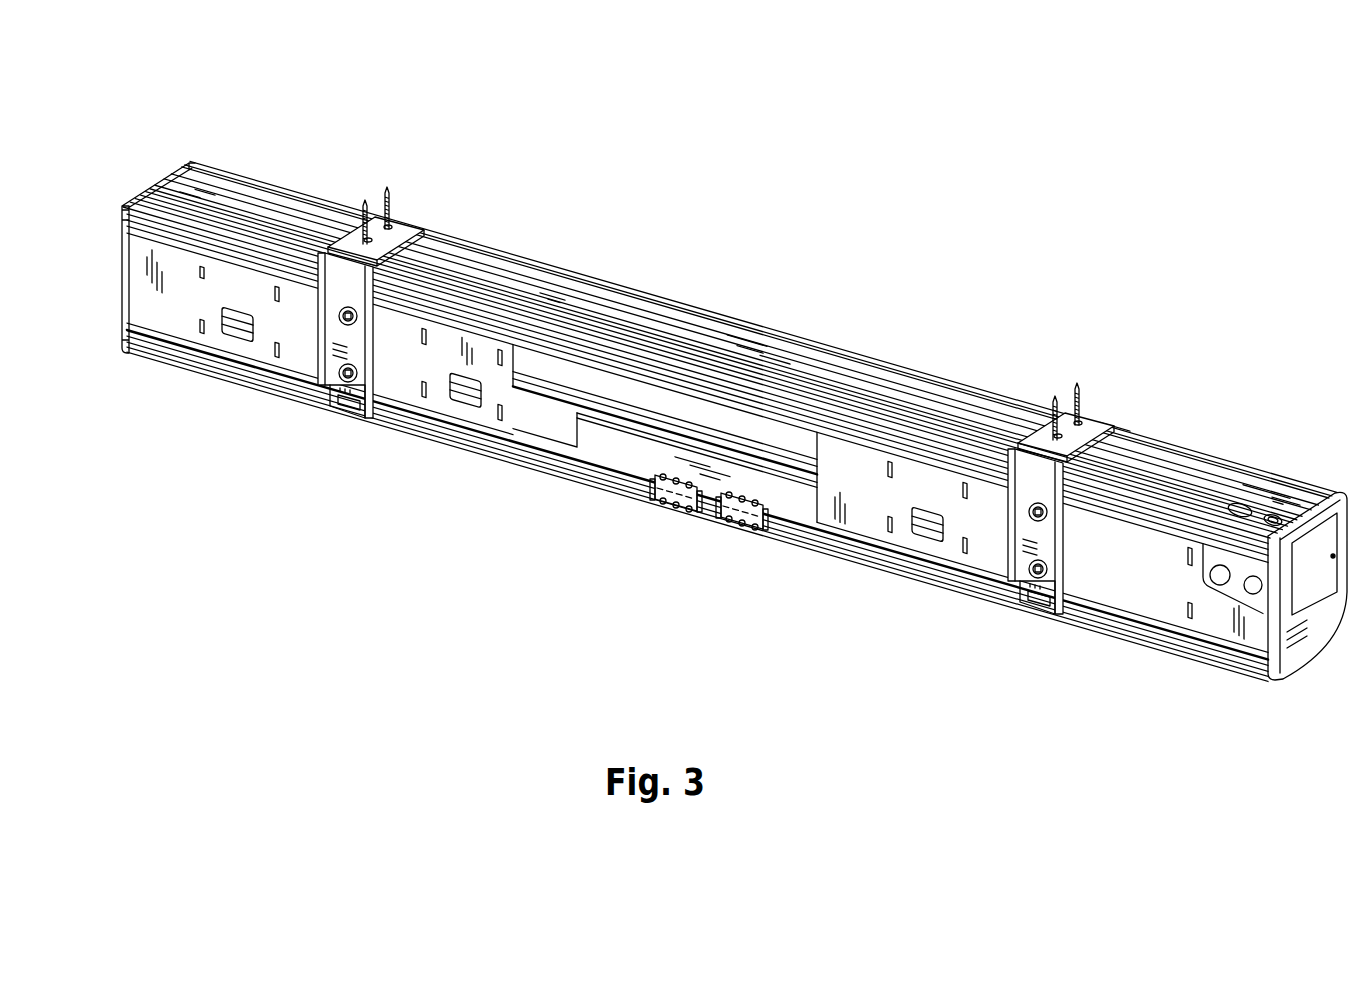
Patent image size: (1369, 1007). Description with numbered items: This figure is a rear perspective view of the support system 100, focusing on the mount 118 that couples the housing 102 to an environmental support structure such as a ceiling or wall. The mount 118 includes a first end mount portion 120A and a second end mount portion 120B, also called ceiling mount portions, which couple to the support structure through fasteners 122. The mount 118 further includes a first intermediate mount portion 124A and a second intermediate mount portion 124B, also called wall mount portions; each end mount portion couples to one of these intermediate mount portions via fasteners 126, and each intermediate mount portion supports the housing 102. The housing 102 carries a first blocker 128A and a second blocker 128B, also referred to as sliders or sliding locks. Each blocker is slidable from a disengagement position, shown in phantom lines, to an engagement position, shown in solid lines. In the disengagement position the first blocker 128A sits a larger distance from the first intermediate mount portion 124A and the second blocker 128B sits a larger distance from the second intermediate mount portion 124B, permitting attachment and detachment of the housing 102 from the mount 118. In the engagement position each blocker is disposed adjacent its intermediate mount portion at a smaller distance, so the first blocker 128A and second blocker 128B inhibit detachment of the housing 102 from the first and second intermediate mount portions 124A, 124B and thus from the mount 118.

The support system 100 is at (919, 158).
The housing 102 is at (708, 300).
The mount 118 is at (264, 456).
The first end mount portion 120A is at (1085, 425).
The second end mount portion 120B is at (399, 231).
The fasteners 122 is at (387, 186).
The first intermediate mount portion 124A is at (912, 540).
The second intermediate mount portion 124B is at (187, 322).
The fasteners 126 is at (357, 376).
The first blocker 128A is at (1047, 610).
The second blocker 128B is at (354, 407).